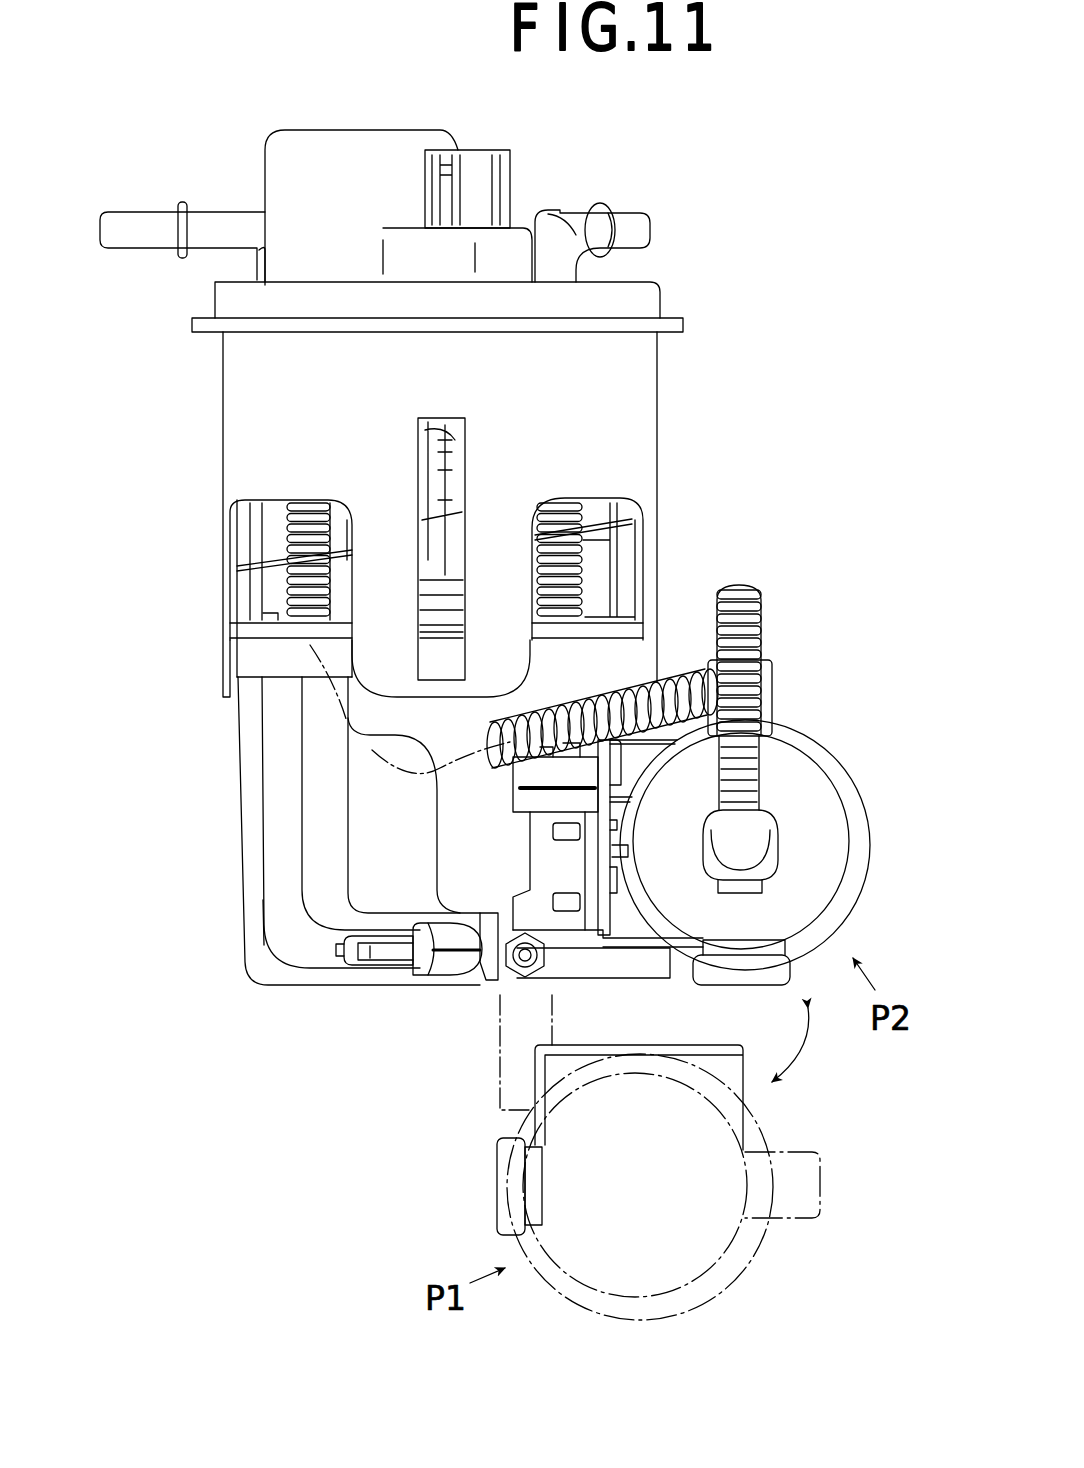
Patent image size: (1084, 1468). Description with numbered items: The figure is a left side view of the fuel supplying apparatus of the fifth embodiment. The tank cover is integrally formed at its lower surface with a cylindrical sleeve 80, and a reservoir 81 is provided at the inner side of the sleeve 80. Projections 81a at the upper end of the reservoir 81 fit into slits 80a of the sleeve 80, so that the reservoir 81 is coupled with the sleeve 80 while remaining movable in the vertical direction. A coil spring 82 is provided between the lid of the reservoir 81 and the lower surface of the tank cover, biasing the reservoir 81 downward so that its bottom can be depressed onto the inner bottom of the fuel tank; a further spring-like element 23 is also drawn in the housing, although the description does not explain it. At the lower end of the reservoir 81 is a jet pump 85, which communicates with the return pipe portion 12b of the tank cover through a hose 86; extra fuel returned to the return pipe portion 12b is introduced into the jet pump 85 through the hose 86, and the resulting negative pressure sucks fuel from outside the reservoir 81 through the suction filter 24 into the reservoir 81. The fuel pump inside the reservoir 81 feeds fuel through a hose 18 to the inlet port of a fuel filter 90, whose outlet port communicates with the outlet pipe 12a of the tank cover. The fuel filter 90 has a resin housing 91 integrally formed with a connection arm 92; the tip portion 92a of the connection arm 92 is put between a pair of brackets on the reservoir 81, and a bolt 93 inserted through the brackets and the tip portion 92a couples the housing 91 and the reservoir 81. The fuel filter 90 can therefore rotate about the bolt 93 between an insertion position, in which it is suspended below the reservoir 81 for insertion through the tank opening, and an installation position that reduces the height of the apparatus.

The outlet pipe 12a is at (645, 226).
The return pipe portion 12b is at (205, 212).
The hose 18 is at (752, 607).
The spring 23 is at (563, 572).
The suction filter 24 is at (443, 970).
The cylindrical sleeve 80 is at (240, 453).
The slits 80a is at (455, 450).
The reservoir 81 is at (245, 768).
The projections 81a is at (430, 657).
The coil spring 82 is at (282, 567).
The jet pump 85 is at (378, 960).
The hose 86 is at (285, 862).
The fuel filter 90 is at (850, 752).
The housing 91 is at (835, 823).
The connection arm 92 is at (610, 968).
The tip portion 92a is at (503, 1045).
The bolt 93 is at (505, 975).